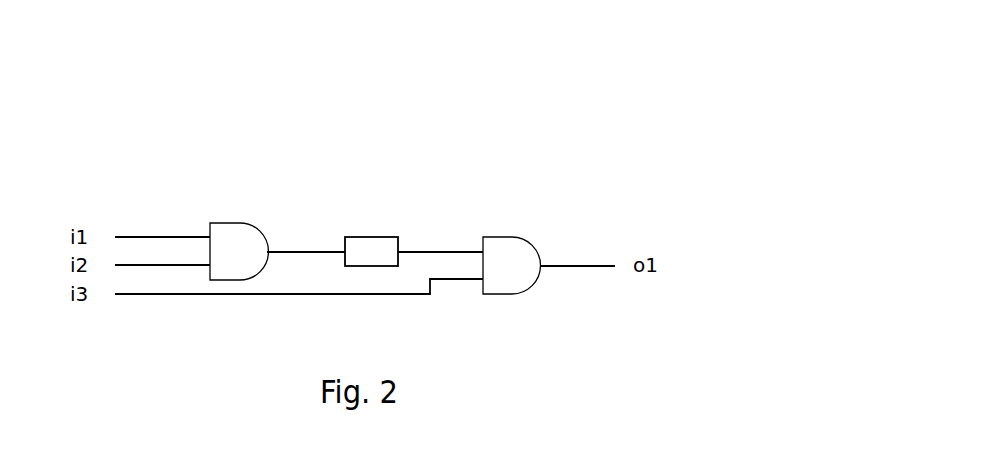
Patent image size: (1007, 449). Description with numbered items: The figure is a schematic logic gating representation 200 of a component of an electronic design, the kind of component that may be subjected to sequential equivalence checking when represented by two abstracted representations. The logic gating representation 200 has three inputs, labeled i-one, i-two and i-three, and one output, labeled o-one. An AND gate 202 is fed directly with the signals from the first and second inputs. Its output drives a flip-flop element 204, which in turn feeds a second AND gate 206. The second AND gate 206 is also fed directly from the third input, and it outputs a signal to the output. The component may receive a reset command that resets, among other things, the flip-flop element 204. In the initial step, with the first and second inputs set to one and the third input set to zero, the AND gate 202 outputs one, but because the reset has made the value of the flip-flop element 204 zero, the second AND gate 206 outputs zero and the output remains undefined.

The logic gating representation 200 is at (515, 120).
The AND gate 202 is at (237, 222).
The flip-flop element 204 is at (375, 237).
The second AND gate 206 is at (517, 237).